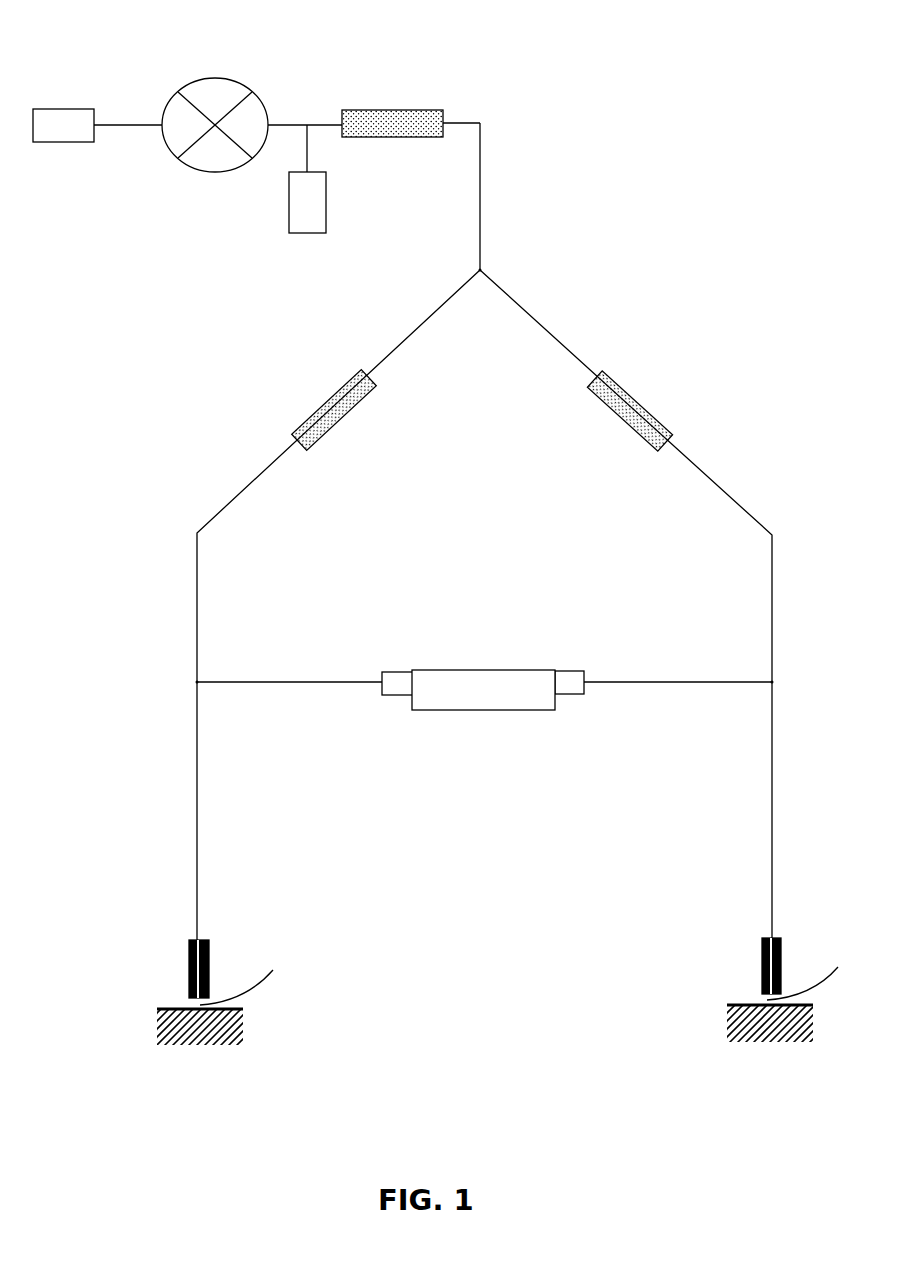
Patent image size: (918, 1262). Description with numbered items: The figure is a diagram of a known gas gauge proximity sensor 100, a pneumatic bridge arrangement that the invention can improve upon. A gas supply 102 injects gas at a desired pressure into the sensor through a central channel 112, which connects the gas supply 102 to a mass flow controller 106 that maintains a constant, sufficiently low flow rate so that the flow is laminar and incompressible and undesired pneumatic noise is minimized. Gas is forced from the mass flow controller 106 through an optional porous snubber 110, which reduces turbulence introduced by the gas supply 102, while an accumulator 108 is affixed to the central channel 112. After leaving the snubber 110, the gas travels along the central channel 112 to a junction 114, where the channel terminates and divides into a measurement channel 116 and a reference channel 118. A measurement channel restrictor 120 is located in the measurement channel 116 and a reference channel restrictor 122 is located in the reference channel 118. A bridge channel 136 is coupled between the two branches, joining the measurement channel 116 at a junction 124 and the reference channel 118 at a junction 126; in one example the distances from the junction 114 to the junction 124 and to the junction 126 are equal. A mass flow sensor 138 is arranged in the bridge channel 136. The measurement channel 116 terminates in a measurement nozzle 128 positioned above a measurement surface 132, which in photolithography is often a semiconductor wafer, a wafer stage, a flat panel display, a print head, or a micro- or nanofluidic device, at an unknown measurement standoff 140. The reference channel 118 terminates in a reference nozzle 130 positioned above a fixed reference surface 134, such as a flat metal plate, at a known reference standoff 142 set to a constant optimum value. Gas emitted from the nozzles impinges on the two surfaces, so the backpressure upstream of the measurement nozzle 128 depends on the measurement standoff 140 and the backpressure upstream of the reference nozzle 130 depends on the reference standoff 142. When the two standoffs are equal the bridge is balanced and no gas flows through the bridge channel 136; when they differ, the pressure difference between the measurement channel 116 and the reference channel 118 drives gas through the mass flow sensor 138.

The gas gauge proximity sensor 100 is at (802, 35).
The gas supply 102 is at (52, 108).
The mass flow controller 106 is at (212, 78).
The accumulator 108 is at (308, 233).
The porous snubber 110 is at (393, 110).
The central channel 112 is at (103, 120).
The junction 114 is at (483, 272).
The measurement channel 116 is at (408, 340).
The reference channel 118 is at (515, 308).
The measurement channel restrictor 120 is at (362, 409).
The reference channel restrictor 122 is at (657, 416).
The junction 124 is at (195, 682).
The junction 126 is at (774, 682).
The measurement nozzle 128 is at (190, 953).
The reference nozzle 130 is at (782, 948).
The measurement surface 132 is at (243, 1009).
The reference surface 134 is at (813, 1005).
The bridge channel 136 is at (287, 683).
The mass flow sensor 138 is at (498, 670).
The measurement standoff 140 is at (247, 976).
The reference standoff 142 is at (813, 973).